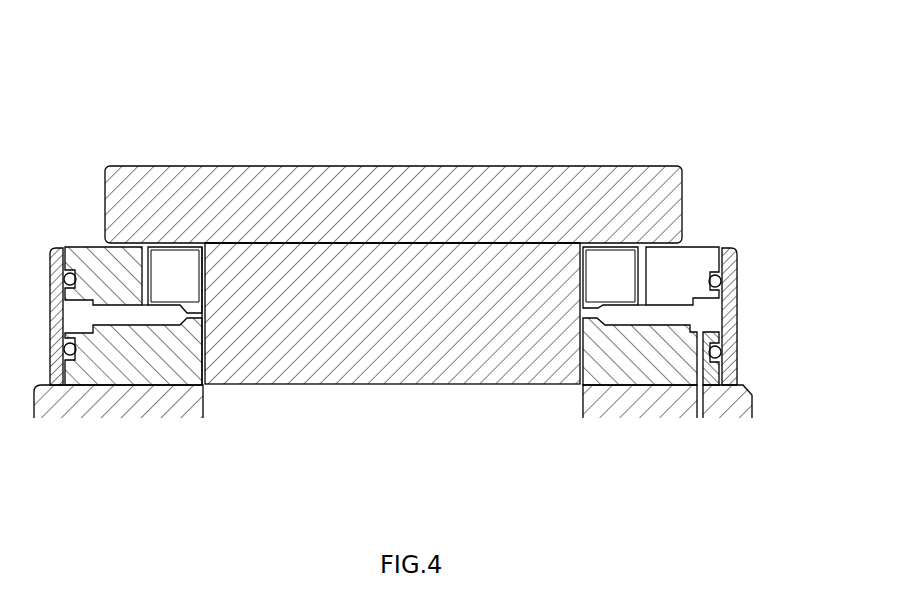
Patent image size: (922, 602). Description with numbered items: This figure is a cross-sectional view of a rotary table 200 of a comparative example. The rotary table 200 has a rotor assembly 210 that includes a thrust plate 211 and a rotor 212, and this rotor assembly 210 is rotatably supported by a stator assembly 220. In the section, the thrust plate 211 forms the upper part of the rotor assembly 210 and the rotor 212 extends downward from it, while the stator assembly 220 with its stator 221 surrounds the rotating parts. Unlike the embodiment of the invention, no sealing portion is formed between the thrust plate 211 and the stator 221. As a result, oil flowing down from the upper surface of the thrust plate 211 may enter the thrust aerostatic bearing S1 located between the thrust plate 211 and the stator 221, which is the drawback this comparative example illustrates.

The rotary table 200 is at (157, 59).
The rotor assembly 210 is at (642, 154).
The thrust plate 211 is at (445, 180).
The rotor 212 is at (450, 386).
The stator assembly 220 is at (744, 245).
The stator 221 is at (698, 283).
The thrust aerostatic bearing S1 is at (620, 243).